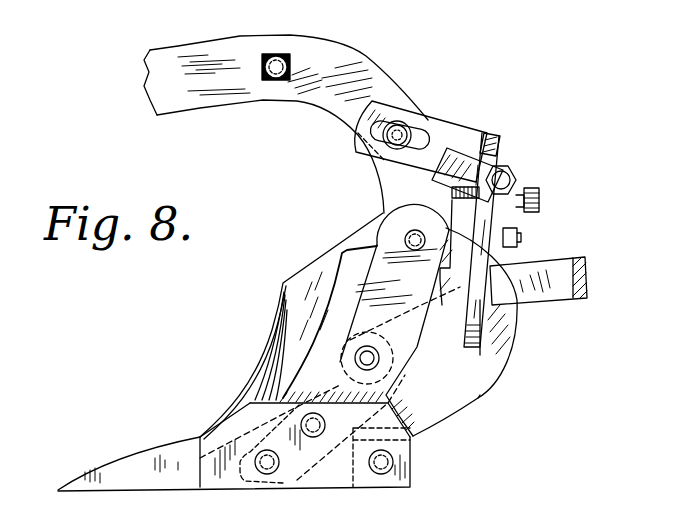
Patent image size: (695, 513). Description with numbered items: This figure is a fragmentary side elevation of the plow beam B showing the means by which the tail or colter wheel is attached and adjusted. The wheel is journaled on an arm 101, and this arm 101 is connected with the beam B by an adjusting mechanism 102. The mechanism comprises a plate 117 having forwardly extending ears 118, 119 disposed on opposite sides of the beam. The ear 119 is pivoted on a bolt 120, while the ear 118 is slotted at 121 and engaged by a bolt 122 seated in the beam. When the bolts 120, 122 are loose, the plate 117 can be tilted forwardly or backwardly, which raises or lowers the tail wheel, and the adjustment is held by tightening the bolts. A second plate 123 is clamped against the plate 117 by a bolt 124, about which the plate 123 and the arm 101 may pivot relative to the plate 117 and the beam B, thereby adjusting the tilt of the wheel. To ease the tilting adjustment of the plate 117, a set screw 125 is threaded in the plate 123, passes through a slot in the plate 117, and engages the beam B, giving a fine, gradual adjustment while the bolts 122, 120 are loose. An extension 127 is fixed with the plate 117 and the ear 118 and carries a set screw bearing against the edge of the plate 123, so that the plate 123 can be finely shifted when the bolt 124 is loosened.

The beam B is at (247, 35).
The arm 101 is at (557, 268).
The adjusting mechanism 102 is at (500, 138).
The plate 117 is at (476, 322).
The ear 118 is at (448, 130).
The ear 119 is at (474, 398).
The bolt 120 is at (374, 365).
The slot 121 is at (415, 128).
The bolt 122 is at (372, 163).
The plate 123 is at (498, 222).
The bolt 124 is at (521, 238).
The set screw 125 is at (541, 196).
The extension 127 is at (474, 173).